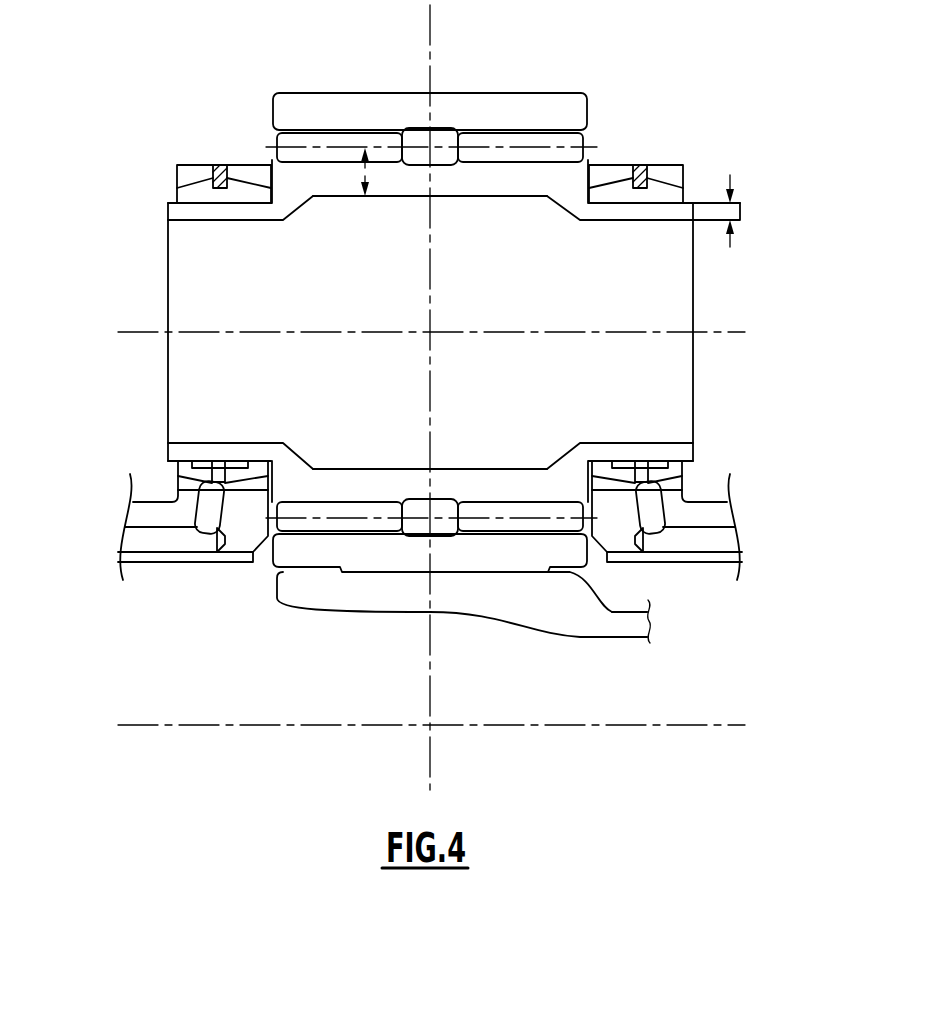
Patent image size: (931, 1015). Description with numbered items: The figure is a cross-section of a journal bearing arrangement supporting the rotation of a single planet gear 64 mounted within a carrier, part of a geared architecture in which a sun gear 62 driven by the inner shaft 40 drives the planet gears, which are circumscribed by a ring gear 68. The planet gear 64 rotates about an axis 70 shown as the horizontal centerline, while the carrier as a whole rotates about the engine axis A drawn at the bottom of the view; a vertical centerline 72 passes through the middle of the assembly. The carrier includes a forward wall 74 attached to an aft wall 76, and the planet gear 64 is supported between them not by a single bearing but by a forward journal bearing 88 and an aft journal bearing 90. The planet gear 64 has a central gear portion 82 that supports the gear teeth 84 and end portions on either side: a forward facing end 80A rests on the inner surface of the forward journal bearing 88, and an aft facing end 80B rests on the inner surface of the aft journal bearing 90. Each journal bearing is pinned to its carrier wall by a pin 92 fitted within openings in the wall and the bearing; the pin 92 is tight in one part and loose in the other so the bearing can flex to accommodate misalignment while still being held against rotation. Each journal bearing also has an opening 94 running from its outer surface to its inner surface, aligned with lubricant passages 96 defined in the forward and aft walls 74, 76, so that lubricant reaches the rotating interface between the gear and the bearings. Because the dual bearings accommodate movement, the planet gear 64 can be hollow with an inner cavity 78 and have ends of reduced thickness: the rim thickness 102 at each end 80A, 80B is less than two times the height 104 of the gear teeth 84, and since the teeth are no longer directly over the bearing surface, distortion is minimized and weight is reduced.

The inner shaft 40 is at (585, 623).
The sun gear 62 is at (370, 557).
The planet gear 64 is at (154, 292).
The ring gear 68 is at (517, 103).
The axis 70 is at (727, 318).
The longitudinal axis 72 is at (433, 33).
The forward wall 74 is at (190, 173).
The aft wall 76 is at (673, 172).
The inner cavity 78 is at (339, 404).
The forward facing end 80A is at (225, 213).
The aft facing end 80B is at (637, 213).
The central gear portion 82 is at (510, 184).
The gear teeth 84 is at (578, 140).
The forward journal bearing 88 is at (193, 193).
The aft journal bearing 90 is at (675, 192).
The pin 92 is at (222, 165).
The opening 94 is at (220, 472).
The lubricant passages 96 is at (206, 522).
The rim thickness 102 is at (731, 247).
The height 104 is at (365, 174).
The engine axis A is at (717, 725).